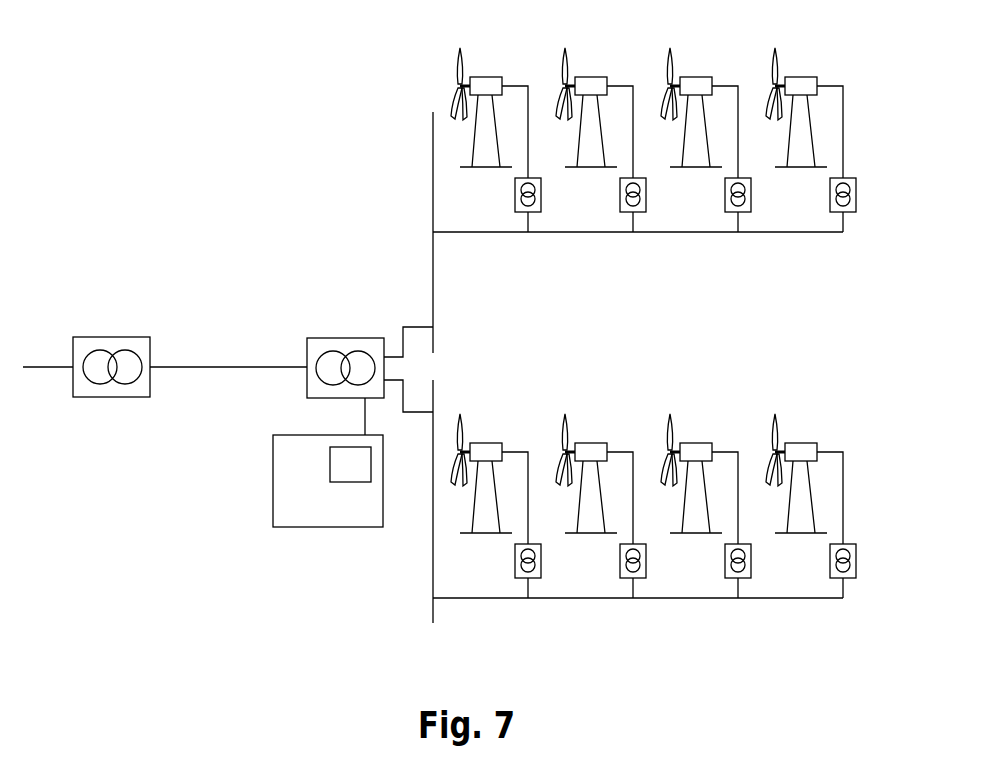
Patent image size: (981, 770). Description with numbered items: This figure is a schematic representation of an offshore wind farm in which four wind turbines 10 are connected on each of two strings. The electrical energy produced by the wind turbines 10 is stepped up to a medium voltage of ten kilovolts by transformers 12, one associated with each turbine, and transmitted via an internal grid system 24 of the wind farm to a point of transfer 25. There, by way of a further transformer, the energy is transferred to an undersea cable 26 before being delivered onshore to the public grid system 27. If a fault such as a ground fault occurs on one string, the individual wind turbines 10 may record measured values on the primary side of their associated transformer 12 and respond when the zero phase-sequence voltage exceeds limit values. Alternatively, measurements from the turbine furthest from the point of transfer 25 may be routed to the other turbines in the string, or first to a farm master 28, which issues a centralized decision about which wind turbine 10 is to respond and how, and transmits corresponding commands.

The wind turbine 10 is at (484, 77).
The transformer 12 is at (541, 194).
The internal grid system 24 is at (500, 232).
The point of transfer 25 is at (335, 338).
The undersea cable 26 is at (237, 367).
The public grid system 27 is at (117, 337).
The farm master 28 is at (292, 527).